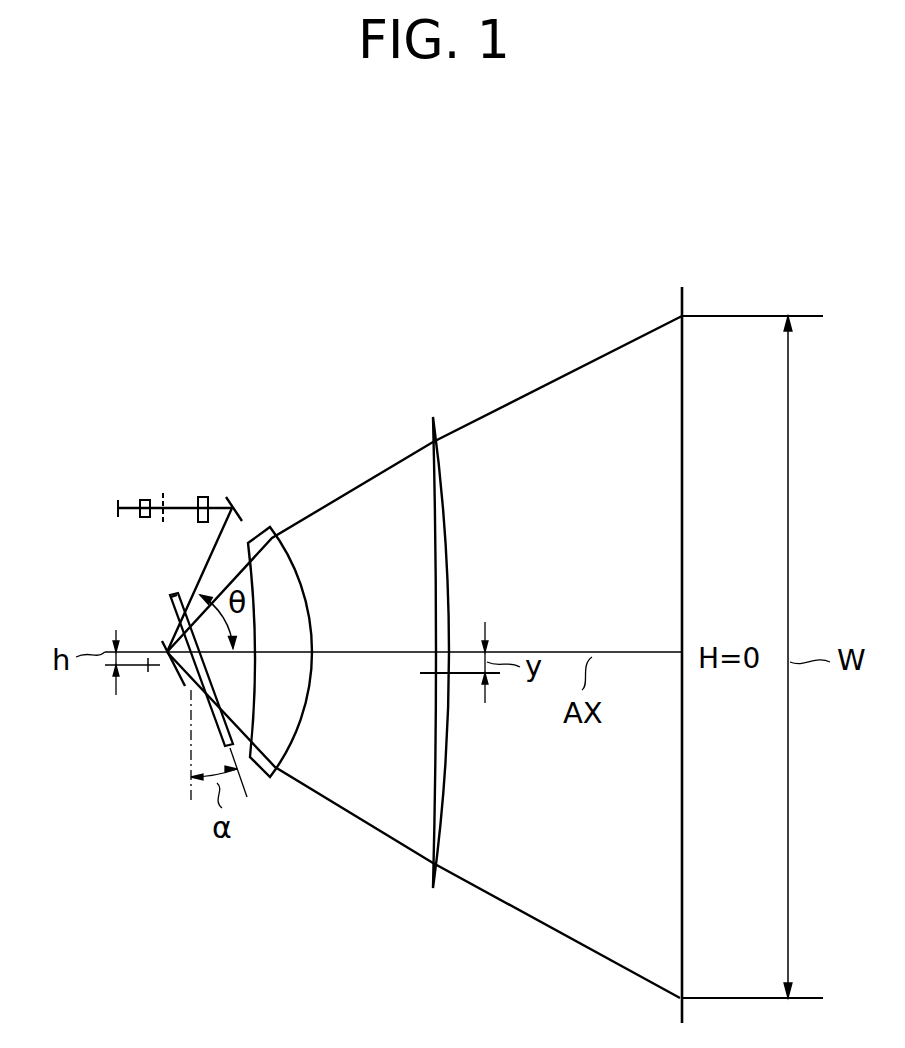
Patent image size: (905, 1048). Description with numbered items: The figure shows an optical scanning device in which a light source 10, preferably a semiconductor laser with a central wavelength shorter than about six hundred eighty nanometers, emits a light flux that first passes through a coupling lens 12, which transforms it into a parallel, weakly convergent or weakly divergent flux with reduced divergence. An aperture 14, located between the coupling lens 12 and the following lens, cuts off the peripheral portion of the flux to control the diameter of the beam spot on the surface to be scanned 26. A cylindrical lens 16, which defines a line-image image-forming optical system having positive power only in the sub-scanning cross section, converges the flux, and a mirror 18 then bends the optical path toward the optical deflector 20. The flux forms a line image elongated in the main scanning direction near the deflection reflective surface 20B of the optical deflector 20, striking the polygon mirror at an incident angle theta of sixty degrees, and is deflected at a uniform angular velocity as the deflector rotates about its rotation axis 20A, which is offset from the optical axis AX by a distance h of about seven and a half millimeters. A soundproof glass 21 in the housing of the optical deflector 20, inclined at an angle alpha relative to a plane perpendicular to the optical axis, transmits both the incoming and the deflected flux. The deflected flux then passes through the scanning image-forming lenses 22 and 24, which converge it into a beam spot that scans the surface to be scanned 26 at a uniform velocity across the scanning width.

The light source 10 is at (118, 505).
The coupling lens 12 is at (146, 497).
The aperture 14 is at (162, 522).
The cylindrical lens 16 is at (203, 495).
The mirror 18 is at (233, 497).
The optical deflector 20 is at (143, 647).
The rotation axis 20A is at (150, 670).
The deflection reflective surface 20B is at (182, 674).
The soundproof glass 21 is at (173, 605).
The scanning image-forming lens 22 is at (295, 608).
The scanning image-forming lens 24 is at (440, 563).
The surface to be scanned 26 is at (684, 532).